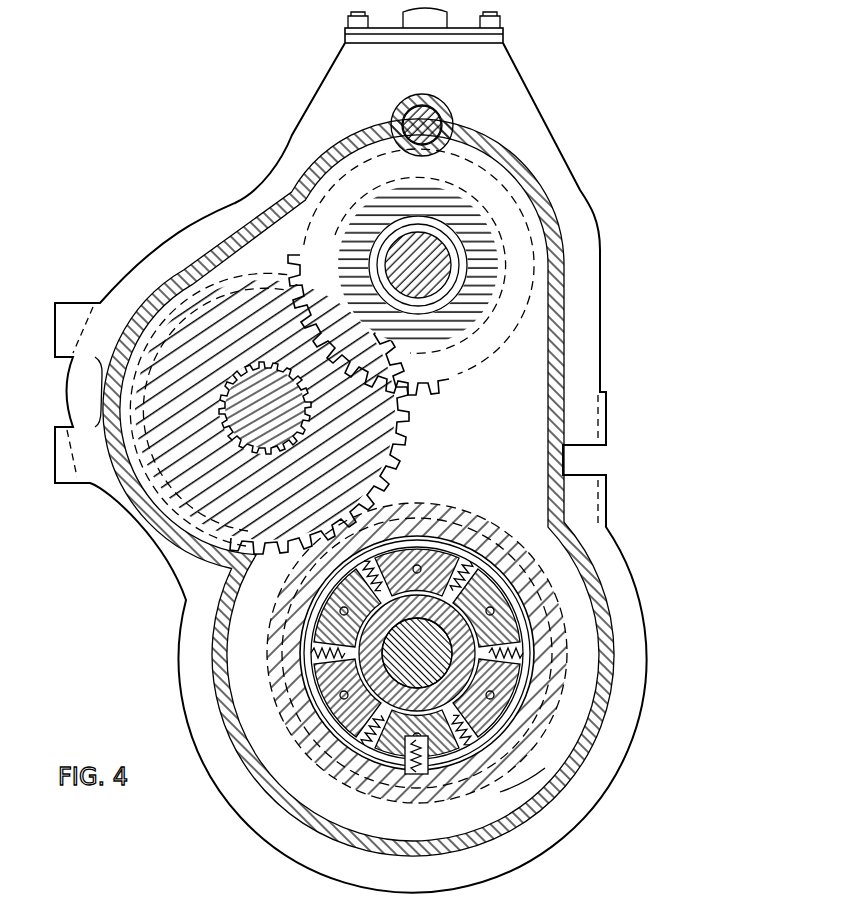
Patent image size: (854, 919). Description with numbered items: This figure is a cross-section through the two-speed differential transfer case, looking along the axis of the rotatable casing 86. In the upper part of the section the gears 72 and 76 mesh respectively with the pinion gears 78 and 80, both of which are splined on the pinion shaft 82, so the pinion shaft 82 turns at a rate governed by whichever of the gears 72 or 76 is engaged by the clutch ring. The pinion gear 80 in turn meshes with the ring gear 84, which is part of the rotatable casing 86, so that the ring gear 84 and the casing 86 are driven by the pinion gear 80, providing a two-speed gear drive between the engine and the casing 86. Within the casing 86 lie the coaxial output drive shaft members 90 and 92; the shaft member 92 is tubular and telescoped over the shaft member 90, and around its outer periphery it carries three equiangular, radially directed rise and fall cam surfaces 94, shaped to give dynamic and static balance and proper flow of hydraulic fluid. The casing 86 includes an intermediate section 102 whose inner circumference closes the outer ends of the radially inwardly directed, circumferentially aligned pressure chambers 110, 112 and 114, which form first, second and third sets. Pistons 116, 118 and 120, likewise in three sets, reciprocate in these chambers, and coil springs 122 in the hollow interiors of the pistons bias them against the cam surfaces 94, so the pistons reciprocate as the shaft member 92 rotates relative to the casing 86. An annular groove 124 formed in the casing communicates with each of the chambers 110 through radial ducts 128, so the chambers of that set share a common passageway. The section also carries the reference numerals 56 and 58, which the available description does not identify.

The shaft 56 is at (425, 245).
The bolt 58 is at (440, 118).
The gear 72 is at (468, 372).
The gear 76 is at (441, 386).
The pinion gear 78 is at (398, 429).
The pinion gear 80 is at (398, 470).
The pinion shaft 82 is at (280, 417).
The ring gear 84 is at (442, 515).
The rotatable casing 86 is at (456, 812).
The output drive shaft member 90 is at (417, 653).
The output drive shaft member 92 is at (462, 685).
The rise and fall cam surfaces 94 is at (612, 736).
The intermediate section 102 is at (520, 802).
The pressure chambers 110 is at (565, 598).
The pressure chambers 112 is at (528, 650).
The pressure chambers 114 is at (466, 521).
The pistons 116 is at (382, 764).
The pistons 118 is at (352, 704).
The pistons 120 is at (338, 652).
The coil springs 122 is at (545, 772).
The annular groove 124 is at (492, 535).
The radial ducts 128 is at (555, 592).